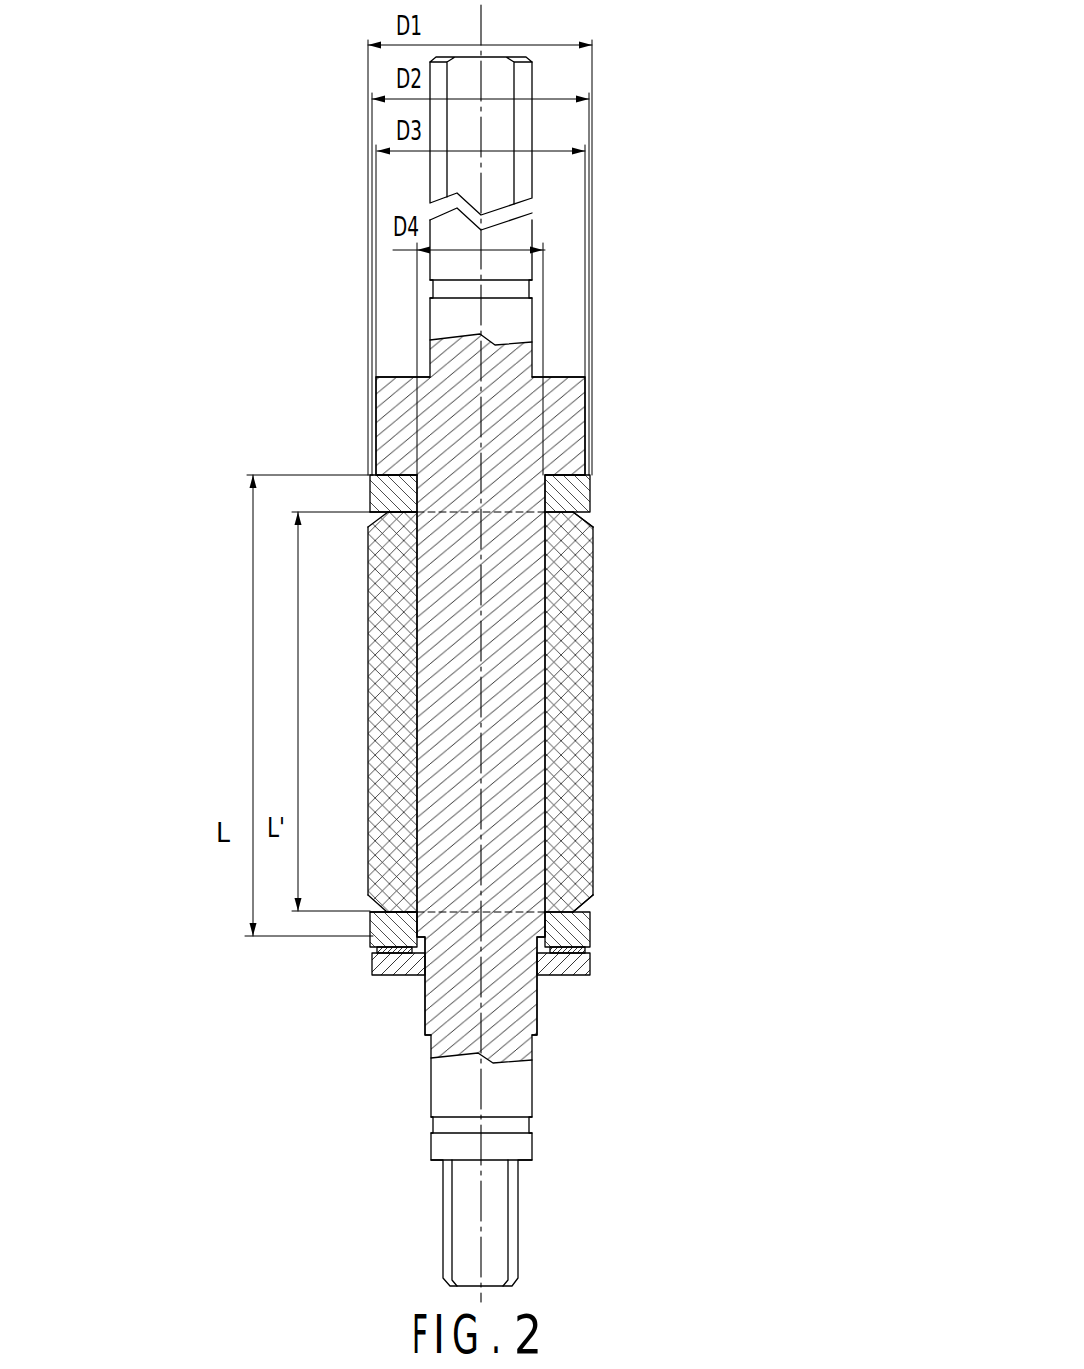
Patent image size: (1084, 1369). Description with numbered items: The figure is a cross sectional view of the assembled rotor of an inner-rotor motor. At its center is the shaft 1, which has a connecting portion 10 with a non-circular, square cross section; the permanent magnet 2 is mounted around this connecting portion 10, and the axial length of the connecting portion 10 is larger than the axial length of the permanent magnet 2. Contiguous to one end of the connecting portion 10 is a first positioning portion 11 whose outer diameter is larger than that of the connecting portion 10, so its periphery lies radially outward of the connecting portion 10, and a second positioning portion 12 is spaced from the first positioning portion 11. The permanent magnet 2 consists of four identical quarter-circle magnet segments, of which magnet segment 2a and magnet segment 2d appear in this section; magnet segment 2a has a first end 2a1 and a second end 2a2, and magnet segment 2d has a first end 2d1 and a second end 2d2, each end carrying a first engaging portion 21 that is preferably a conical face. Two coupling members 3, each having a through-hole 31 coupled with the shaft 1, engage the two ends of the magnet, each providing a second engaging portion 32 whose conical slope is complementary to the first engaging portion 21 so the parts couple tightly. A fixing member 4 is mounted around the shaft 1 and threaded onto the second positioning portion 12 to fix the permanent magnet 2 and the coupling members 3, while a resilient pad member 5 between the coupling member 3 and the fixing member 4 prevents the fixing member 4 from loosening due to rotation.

The shaft 1 is at (600, 317).
The first positioning portion 11 is at (580, 415).
The second positioning portion 12 is at (538, 1018).
The connecting portion 10 is at (547, 675).
The permanent magnet 2 is at (520, 712).
The magnet segment 2a is at (580, 608).
The first end 2a1 is at (556, 508).
The second end 2a2 is at (565, 915).
The magnet segment 2d is at (392, 717).
The first end 2d1 is at (385, 512).
The second end 2d2 is at (397, 912).
The first engaging portion 21 is at (585, 910).
The coupling member 3 is at (491, 718).
The through-hole 31 is at (415, 494).
The second engaging portion 32 is at (681, 713).
The fixing member 4 is at (572, 968).
The pad member 5 is at (585, 950).